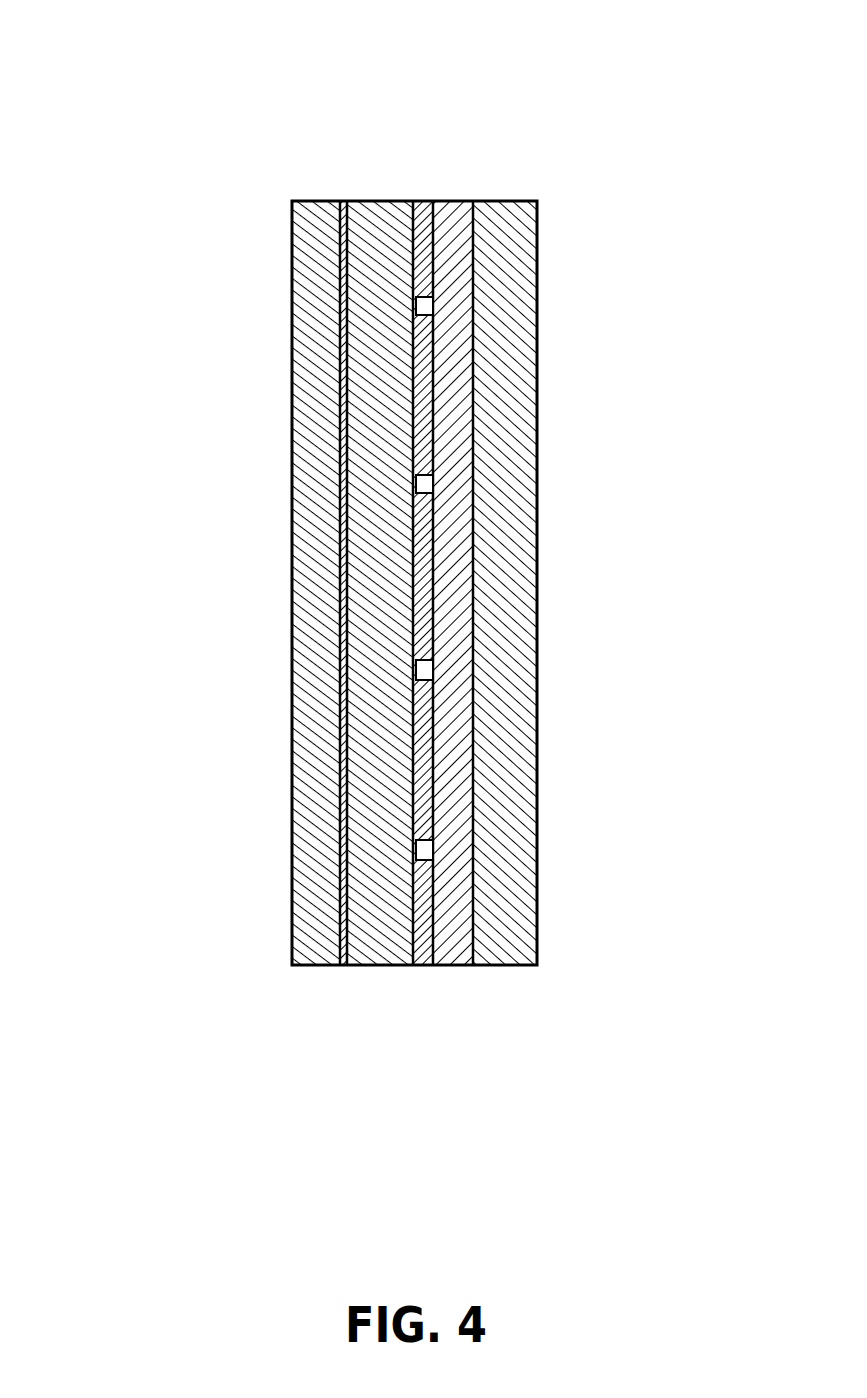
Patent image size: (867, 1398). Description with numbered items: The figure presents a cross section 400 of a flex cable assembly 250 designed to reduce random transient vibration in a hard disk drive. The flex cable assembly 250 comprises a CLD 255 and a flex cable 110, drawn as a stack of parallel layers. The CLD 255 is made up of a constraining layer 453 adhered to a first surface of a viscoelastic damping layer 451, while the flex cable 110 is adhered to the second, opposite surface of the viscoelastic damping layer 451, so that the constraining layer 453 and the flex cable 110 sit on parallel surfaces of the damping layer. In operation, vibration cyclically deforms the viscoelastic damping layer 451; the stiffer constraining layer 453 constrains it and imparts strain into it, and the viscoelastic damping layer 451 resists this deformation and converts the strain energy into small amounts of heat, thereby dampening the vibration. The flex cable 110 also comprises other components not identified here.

The cross section 400 is at (82, 32).
The flex cable assembly 250 is at (612, 192).
The CLD 255 is at (266, 603).
The constraining layer 453 is at (303, 203).
The viscoelastic damping layer 451 is at (343, 201).
The flex cable 110 is at (538, 967).